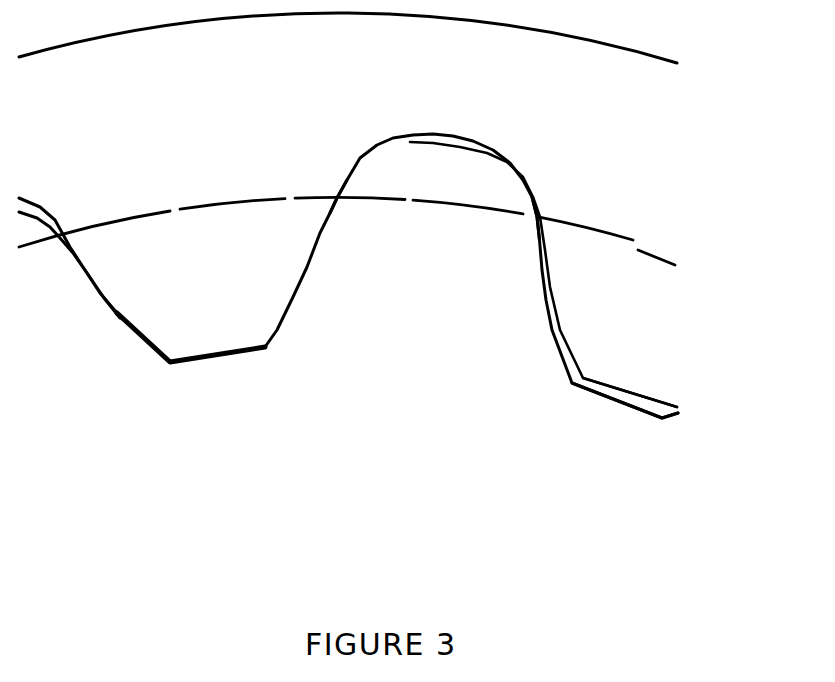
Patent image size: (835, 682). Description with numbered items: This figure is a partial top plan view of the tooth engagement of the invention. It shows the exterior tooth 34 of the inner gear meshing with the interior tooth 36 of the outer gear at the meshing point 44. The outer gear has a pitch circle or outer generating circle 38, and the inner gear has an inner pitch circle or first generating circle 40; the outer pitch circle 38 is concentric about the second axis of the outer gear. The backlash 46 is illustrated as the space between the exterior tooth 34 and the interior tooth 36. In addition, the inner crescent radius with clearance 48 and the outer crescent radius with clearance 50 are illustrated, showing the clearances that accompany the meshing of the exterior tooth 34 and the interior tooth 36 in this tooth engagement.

The exterior tooth 34 is at (471, 276).
The interior tooth 36 is at (142, 280).
The outer pitch circle 38 is at (633, 233).
The inner pitch circle 40 is at (675, 265).
The meshing point 44 is at (337, 197).
The backlash 46 is at (540, 218).
The inner crescent radius with clearance 48 is at (442, 140).
The outer crescent radius with clearance 50 is at (632, 398).